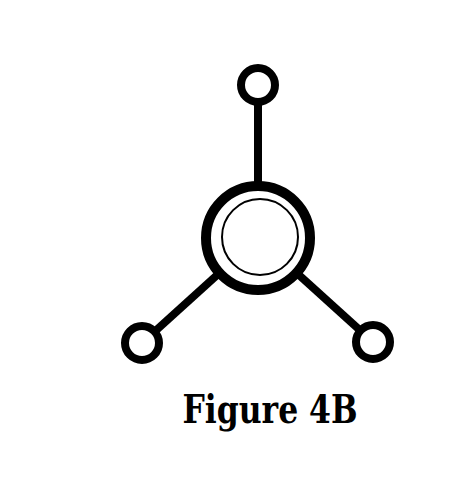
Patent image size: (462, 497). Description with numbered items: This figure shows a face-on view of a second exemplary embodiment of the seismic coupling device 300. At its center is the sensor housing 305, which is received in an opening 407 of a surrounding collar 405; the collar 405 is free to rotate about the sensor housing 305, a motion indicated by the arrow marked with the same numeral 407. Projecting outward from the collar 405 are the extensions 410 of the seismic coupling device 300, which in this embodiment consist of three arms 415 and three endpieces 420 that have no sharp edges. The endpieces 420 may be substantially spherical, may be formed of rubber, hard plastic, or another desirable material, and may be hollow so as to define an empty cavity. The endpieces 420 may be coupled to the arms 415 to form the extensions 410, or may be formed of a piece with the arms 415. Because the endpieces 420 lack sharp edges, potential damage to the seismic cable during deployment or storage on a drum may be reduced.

The seismic coupling device 300 is at (114, 134).
The sensor housing 305 is at (246, 248).
The collar 405 is at (313, 223).
The opening 407 is at (203, 223).
The extensions 410 is at (312, 70).
The arms 415 is at (262, 140).
The endpieces 420 is at (238, 85).